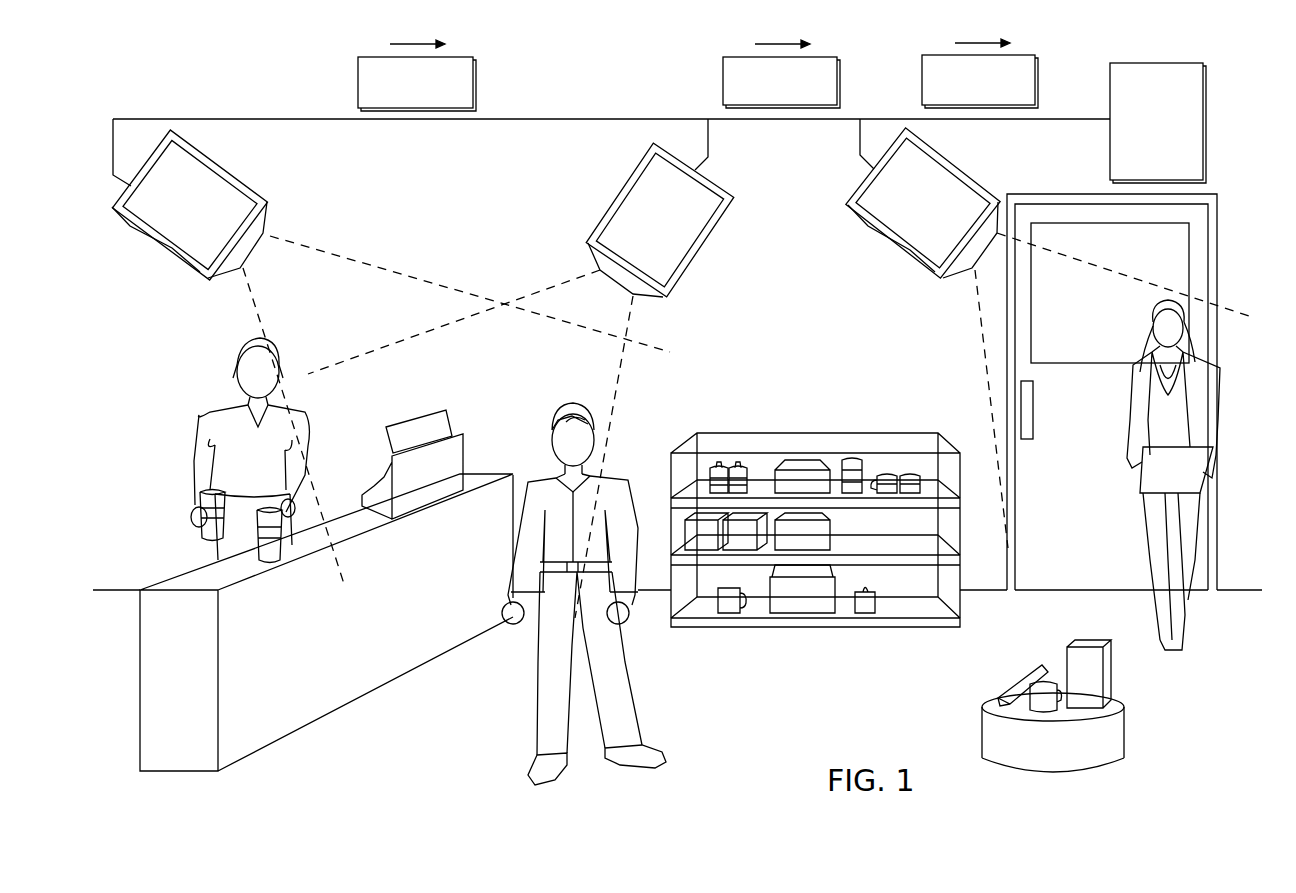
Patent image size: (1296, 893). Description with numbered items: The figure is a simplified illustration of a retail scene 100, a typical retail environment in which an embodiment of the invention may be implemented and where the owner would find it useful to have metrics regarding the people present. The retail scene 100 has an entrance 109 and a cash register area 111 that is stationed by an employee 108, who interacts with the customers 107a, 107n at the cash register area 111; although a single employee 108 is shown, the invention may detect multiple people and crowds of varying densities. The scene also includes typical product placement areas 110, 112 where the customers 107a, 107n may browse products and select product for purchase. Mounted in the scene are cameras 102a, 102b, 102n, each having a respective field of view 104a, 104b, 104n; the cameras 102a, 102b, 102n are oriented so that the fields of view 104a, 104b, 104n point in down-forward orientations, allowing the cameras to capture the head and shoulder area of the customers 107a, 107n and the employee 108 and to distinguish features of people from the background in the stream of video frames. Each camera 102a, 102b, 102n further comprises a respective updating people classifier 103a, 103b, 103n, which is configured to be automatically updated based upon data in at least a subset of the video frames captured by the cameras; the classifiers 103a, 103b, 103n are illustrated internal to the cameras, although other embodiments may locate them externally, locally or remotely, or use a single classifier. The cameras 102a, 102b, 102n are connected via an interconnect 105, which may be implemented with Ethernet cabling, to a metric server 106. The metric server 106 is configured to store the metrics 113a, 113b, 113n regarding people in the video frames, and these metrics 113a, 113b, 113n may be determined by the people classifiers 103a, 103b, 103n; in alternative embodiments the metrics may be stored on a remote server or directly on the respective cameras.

The retail scene 100 is at (170, 90).
The camera 102a is at (233, 176).
The camera 102b is at (616, 190).
The camera 102n is at (968, 172).
The updating people classifier 103a is at (172, 250).
The updating people classifier 103b is at (682, 257).
The updating people classifier 103n is at (906, 252).
The field of view 104a is at (316, 250).
The field of view 104b is at (606, 376).
The field of view 104n is at (984, 320).
The interconnect 105 is at (234, 119).
The metric server 106 is at (1144, 152).
The customer 107a is at (580, 405).
The customer 107n is at (1138, 395).
The employee 108 is at (206, 416).
The entrance 109 is at (1037, 528).
The product placement area 110 is at (913, 442).
The cash register area 111 is at (193, 623).
The product placement area 112 is at (983, 734).
The metrics 113a is at (358, 86).
The metrics 113b is at (723, 86).
The metrics 113n is at (922, 86).